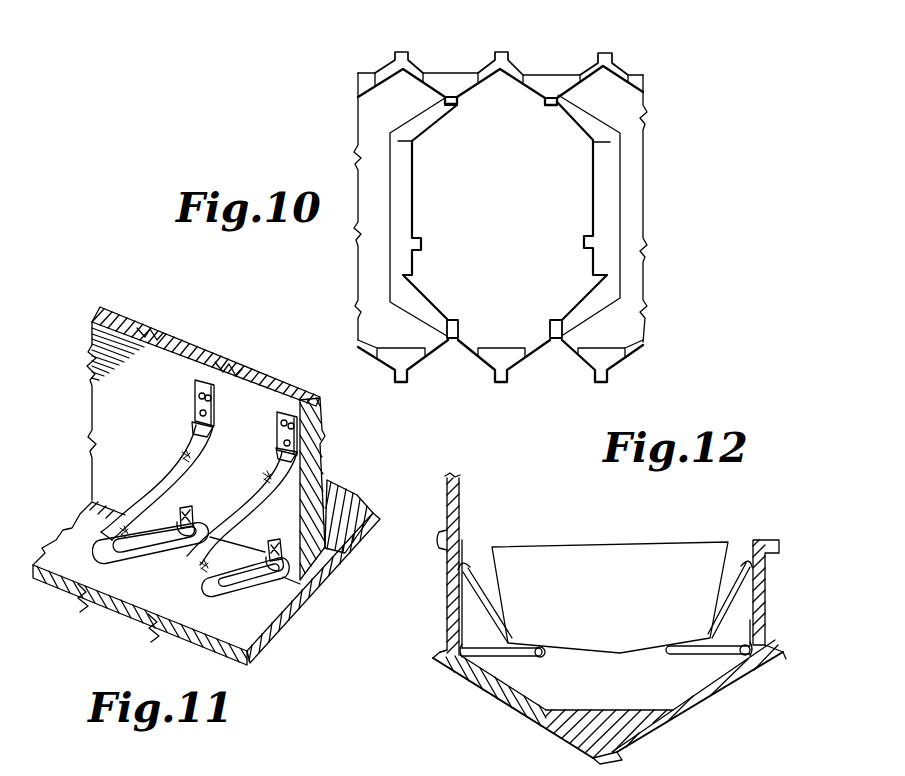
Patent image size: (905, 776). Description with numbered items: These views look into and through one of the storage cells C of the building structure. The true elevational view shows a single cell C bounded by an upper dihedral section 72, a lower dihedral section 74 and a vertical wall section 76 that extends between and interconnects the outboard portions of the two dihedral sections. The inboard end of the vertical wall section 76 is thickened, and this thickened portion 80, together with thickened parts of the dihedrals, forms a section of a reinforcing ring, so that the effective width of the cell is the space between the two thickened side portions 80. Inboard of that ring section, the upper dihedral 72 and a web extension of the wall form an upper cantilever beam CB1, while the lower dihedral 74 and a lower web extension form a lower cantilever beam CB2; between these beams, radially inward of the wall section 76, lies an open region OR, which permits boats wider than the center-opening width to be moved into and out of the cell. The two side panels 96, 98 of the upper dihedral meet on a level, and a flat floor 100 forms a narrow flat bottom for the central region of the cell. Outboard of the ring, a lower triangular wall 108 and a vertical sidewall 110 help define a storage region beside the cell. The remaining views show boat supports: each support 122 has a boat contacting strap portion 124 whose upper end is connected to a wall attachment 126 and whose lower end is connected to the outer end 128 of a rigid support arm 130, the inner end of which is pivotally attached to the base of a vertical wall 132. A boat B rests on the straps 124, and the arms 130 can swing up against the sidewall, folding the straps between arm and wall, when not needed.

In FIG. 10, the upper dihedral section 72 is at (373, 68).
In FIG. 10, the lower dihedral section 74 is at (503, 50).
In FIG. 10, the vertical wall section 76 is at (366, 157).
In FIG. 12, the vertical wall section 76 is at (587, 756).
In FIG. 10, the thickened portion of the vertical wall 80 is at (403, 192).
In FIG. 10, the upper cantilever beam CB1 is at (463, 104).
In FIG. 10, the lower cantilever beam CB2 is at (453, 304).
In FIG. 10, the open region OR is at (420, 213).
In FIG. 10, the cell C is at (514, 218).
In FIG. 12, the cell C is at (693, 530).
In FIG. 12, the boat B is at (567, 556).
In FIG. 12, the side panel of the upper dihedral 96 is at (490, 693).
In FIG. 12, the side panel of the upper dihedral 98 is at (728, 686).
In FIG. 12, the flat floor 100 is at (627, 703).
In FIG. 12, the lower triangular wall 108 is at (768, 538).
In FIG. 12, the vertical sidewall 110 is at (461, 510).
In FIG. 11, the support 122 is at (170, 468).
In FIG. 11, the boat contacting strap portion 124 is at (145, 510).
In FIG. 12, the boat contacting strap portion 124 is at (492, 603).
In FIG. 11, the wall attachment 126 is at (194, 396).
In FIG. 11, the outer end of the support arm 128 is at (84, 606).
In FIG. 11, the rigid support arm 130 is at (149, 556).
In FIG. 12, the rigid support arm 130 is at (505, 658).
In FIG. 11, the wall 132 is at (287, 538).